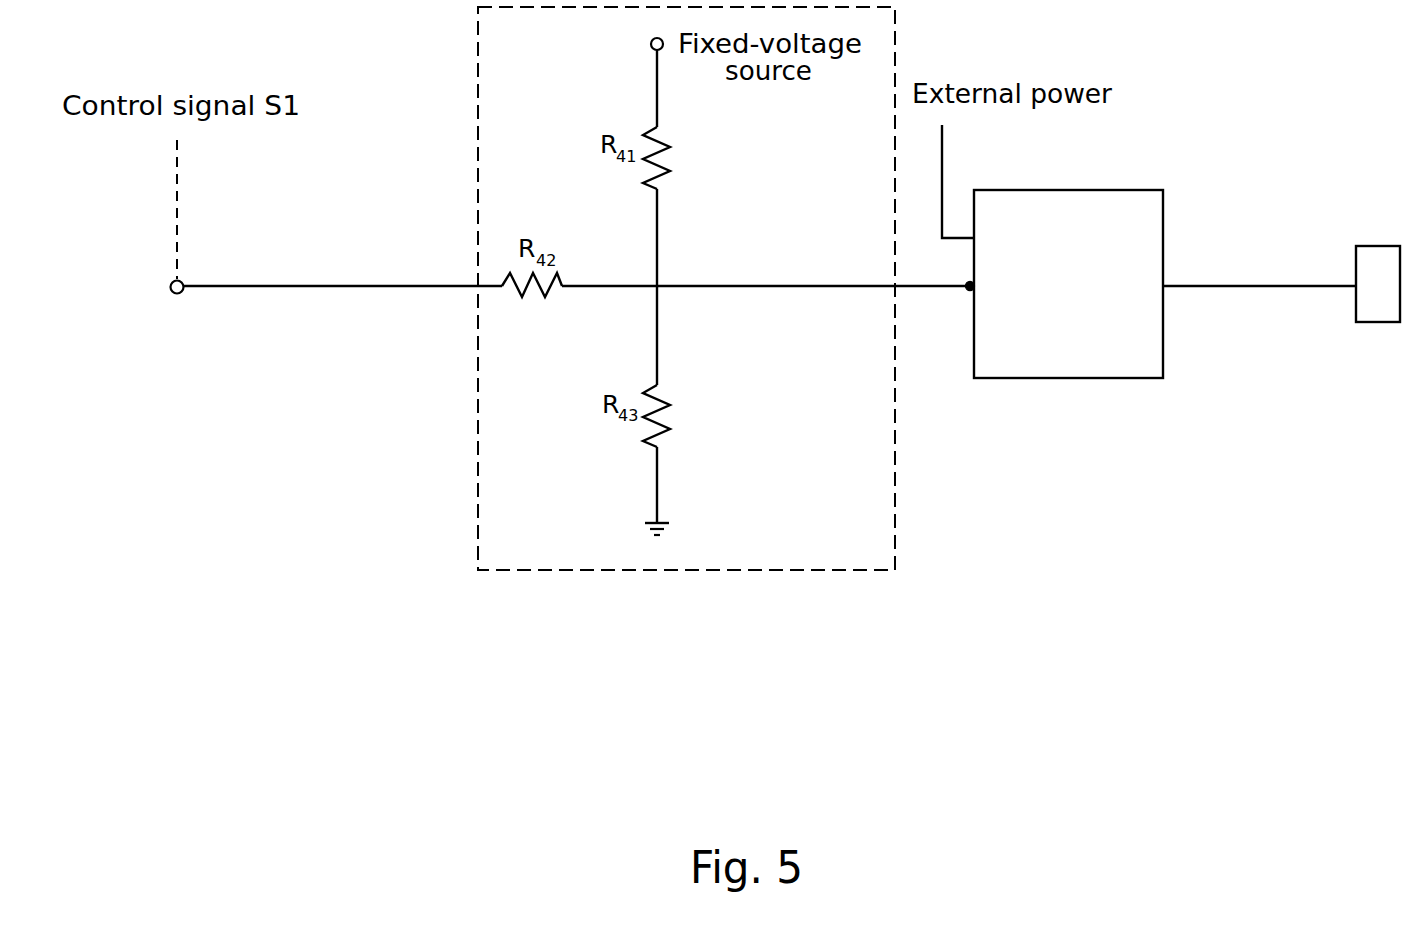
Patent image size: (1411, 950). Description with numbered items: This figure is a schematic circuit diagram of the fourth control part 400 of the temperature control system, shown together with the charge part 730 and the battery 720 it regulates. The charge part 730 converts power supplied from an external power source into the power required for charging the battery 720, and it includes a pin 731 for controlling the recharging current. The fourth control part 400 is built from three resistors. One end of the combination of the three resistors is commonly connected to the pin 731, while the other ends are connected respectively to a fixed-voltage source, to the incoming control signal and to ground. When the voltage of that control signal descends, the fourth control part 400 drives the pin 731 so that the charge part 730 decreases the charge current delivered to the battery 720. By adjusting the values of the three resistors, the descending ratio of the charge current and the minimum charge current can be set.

The fourth control part 400 is at (478, 489).
The battery 720 is at (1374, 312).
The charge part 730 is at (1125, 368).
The pin 731 is at (968, 291).